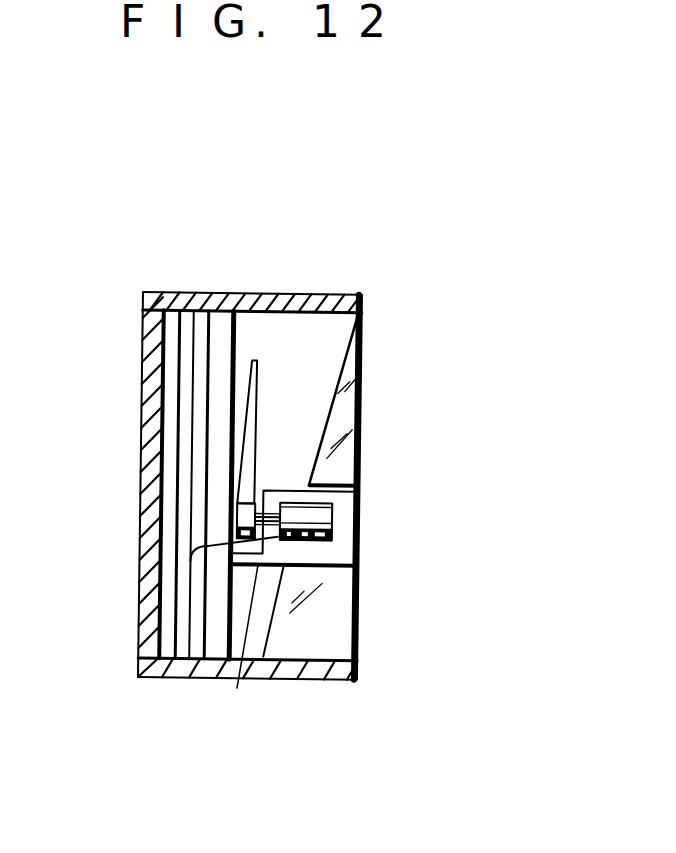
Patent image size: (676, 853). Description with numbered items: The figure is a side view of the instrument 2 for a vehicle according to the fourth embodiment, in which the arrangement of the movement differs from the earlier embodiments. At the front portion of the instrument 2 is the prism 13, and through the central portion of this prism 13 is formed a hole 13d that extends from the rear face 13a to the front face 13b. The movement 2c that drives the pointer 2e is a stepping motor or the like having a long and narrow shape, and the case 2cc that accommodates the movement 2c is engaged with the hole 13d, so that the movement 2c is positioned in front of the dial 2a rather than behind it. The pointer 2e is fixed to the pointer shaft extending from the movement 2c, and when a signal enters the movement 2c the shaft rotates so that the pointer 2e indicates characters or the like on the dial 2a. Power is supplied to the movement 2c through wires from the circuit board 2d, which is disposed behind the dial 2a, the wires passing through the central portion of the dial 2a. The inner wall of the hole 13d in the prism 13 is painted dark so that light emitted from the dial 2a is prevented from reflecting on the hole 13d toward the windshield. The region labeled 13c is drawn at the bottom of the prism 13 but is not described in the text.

The instrument 2 is at (259, 224).
The dial 2a is at (225, 323).
The movement 2c is at (338, 515).
The case 2cc is at (237, 688).
The circuit board 2d is at (185, 398).
The pointer 2e is at (255, 430).
The prism 13 is at (403, 583).
The rear face 13a is at (337, 388).
The front face 13b is at (357, 615).
The bottom wall 13c is at (301, 658).
The hole 13d is at (332, 482).